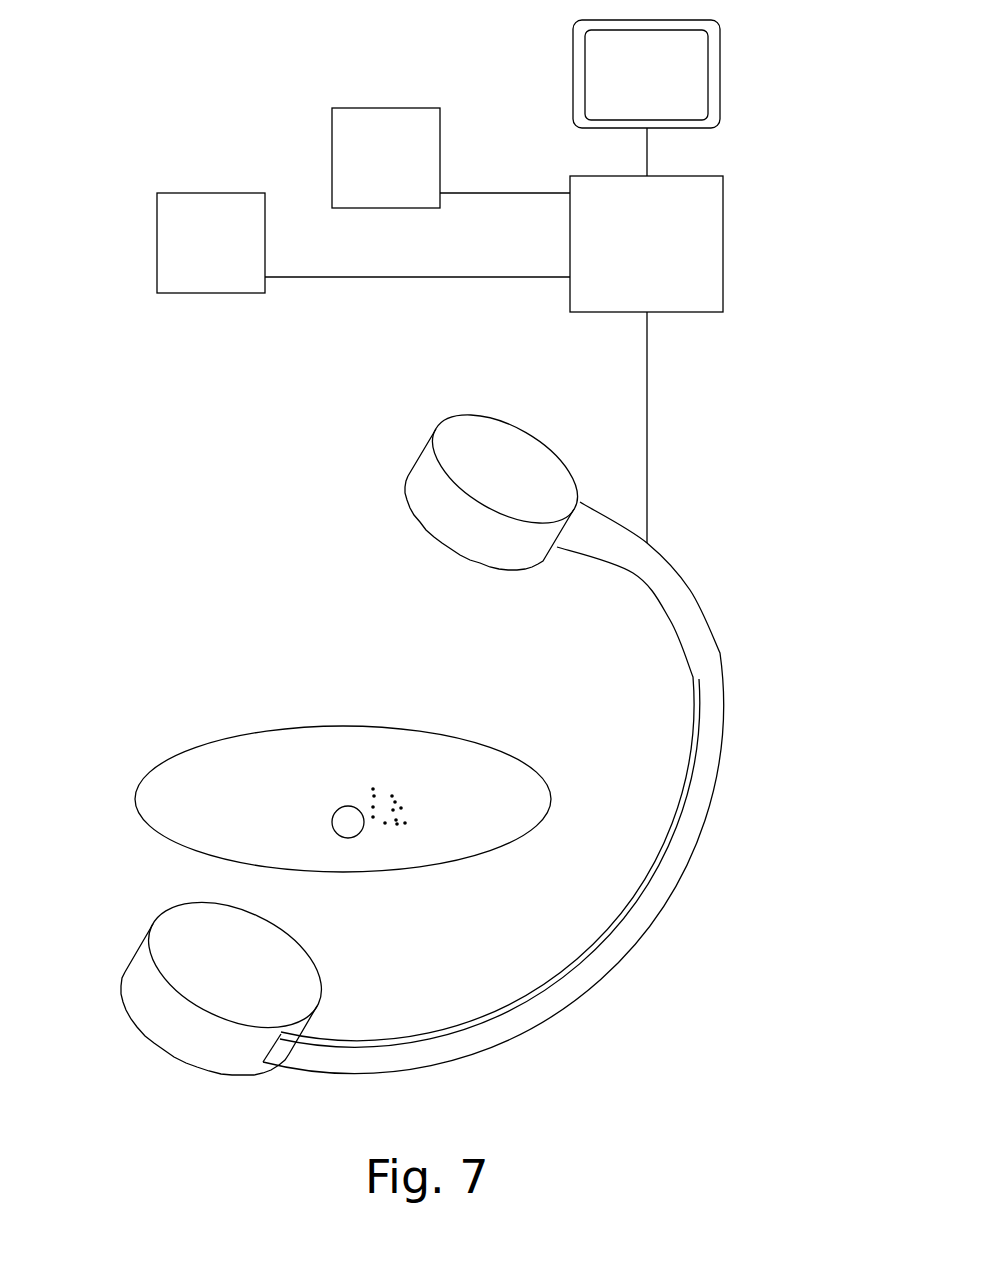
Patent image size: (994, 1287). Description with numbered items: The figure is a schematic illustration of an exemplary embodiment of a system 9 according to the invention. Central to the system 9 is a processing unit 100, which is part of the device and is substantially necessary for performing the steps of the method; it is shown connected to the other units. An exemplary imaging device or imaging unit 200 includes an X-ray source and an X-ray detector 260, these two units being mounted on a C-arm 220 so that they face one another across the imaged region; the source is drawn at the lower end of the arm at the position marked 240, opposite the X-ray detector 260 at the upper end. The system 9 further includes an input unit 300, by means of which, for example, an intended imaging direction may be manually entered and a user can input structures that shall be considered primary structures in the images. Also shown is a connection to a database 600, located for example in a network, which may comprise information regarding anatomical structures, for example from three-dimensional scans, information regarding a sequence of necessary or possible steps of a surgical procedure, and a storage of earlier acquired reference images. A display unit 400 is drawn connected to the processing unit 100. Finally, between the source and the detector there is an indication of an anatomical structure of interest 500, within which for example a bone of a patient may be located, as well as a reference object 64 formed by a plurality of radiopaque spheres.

The system 9 is at (183, 492).
The processing unit 100 is at (700, 238).
The imaging unit 200 is at (687, 858).
The C-arm 220 is at (632, 928).
The X-ray source 240 is at (175, 1035).
The X-ray detector 260 is at (528, 548).
The input unit 300 is at (388, 125).
The display / monitor 400 is at (688, 77).
The anatomical structure of interest 500 is at (351, 839).
The database 600 is at (172, 242).
The reference object 64 is at (403, 833).